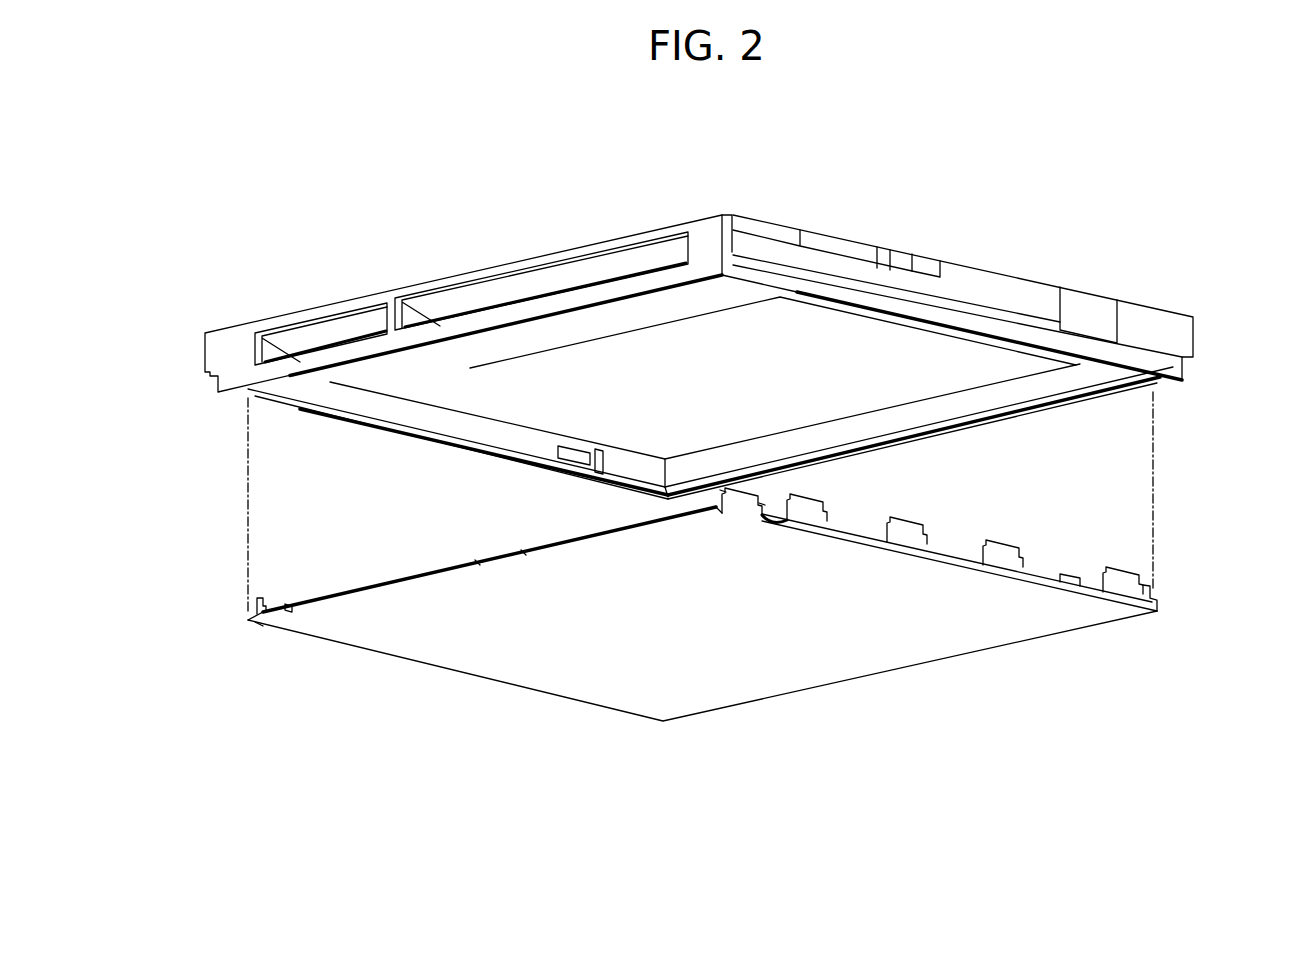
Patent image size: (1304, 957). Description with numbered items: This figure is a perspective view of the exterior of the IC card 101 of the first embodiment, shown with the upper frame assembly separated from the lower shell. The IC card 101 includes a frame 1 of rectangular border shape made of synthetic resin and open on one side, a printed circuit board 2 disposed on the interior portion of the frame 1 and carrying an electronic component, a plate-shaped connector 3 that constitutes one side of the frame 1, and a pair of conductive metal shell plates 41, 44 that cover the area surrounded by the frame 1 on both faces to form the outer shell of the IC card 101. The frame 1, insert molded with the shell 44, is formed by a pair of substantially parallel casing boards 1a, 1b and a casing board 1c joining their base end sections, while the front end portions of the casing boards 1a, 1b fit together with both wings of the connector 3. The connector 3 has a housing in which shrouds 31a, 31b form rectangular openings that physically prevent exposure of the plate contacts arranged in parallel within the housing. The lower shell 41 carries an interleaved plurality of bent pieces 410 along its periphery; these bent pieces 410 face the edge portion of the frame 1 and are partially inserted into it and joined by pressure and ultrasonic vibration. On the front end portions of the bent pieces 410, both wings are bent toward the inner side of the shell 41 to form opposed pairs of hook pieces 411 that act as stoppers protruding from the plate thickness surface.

The IC card 101 is at (248, 166).
The frame 1 is at (1202, 312).
The casing board 1a is at (325, 422).
The casing board 1b is at (983, 272).
The casing board 1c is at (1125, 395).
The printed circuit board 2 is at (503, 392).
The connector 3 is at (198, 328).
The shroud 31a is at (582, 272).
The shroud 31b is at (330, 330).
The shell plate 44 is at (1088, 295).
The shell plate 41 is at (500, 680).
The bent piece 410 is at (805, 505).
The hook piece 411 is at (292, 604).